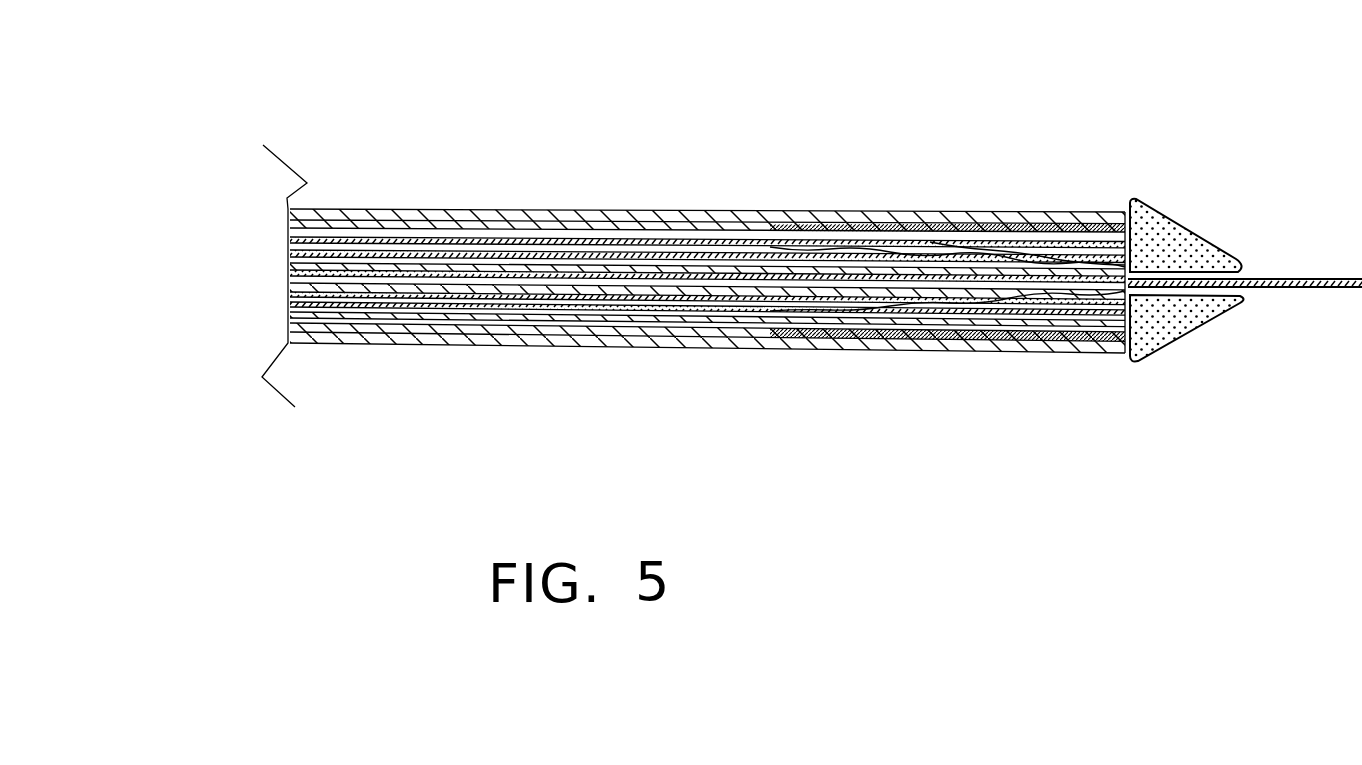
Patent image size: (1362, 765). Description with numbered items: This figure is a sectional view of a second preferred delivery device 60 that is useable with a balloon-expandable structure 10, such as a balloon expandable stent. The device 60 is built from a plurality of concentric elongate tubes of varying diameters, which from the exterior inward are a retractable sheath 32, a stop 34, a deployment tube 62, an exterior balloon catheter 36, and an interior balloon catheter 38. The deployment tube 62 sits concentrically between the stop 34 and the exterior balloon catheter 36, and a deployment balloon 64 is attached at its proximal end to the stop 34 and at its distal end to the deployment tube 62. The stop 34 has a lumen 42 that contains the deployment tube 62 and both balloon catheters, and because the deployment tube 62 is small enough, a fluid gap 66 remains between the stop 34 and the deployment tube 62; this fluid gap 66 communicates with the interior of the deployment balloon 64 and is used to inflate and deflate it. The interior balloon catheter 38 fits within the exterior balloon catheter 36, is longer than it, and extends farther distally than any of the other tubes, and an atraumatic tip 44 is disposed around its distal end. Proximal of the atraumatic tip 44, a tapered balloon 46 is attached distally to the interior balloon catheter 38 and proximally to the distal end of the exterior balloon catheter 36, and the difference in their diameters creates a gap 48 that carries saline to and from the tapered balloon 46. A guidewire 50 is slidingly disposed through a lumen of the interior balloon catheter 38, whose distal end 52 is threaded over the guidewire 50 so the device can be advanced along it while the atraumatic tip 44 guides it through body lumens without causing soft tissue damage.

The device 60 is at (550, 150).
The structure 10 is at (931, 228).
The retractable sheath 32 is at (286, 217).
The stop 34 is at (286, 222).
The deployment tube 62 is at (286, 234).
The exterior balloon catheter 36 is at (286, 248).
The interior balloon catheter 38 is at (286, 266).
The gap 48 is at (286, 290).
The lumen 42 is at (286, 308).
The fluid gap 66 is at (286, 320).
The deployment balloon 64 is at (1045, 230).
The tapered balloon 46 is at (1037, 298).
The distal end 52 is at (1250, 270).
The atraumatic tip 44 is at (1177, 345).
The guidewire 50 is at (1300, 291).